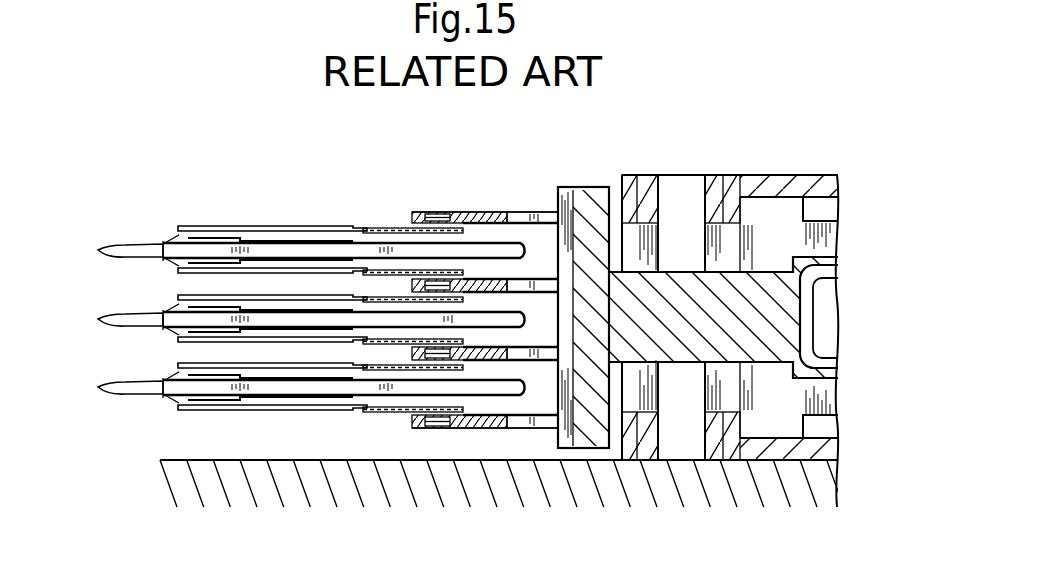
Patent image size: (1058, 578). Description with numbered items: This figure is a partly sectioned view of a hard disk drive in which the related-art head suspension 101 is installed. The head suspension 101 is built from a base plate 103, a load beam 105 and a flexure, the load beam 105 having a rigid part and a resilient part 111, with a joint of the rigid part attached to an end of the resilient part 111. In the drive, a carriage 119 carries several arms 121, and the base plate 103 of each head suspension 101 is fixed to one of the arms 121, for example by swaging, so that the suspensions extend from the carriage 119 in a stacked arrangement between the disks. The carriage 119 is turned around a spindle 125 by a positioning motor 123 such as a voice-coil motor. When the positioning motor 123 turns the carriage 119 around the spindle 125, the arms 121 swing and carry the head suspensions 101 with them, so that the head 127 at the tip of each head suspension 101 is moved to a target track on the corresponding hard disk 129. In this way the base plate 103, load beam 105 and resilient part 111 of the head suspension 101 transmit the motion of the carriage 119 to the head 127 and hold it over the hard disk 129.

The head suspension 101 is at (268, 291).
The base plate 103 is at (431, 277).
The load beam 105 is at (256, 223).
The resilient part 111 is at (384, 224).
The carriage 119 is at (702, 174).
The arms 121 is at (537, 283).
The positioning motor 123 is at (798, 172).
The spindle 125 is at (680, 188).
The head 127 is at (99, 250).
The hard disk 129 is at (503, 250).